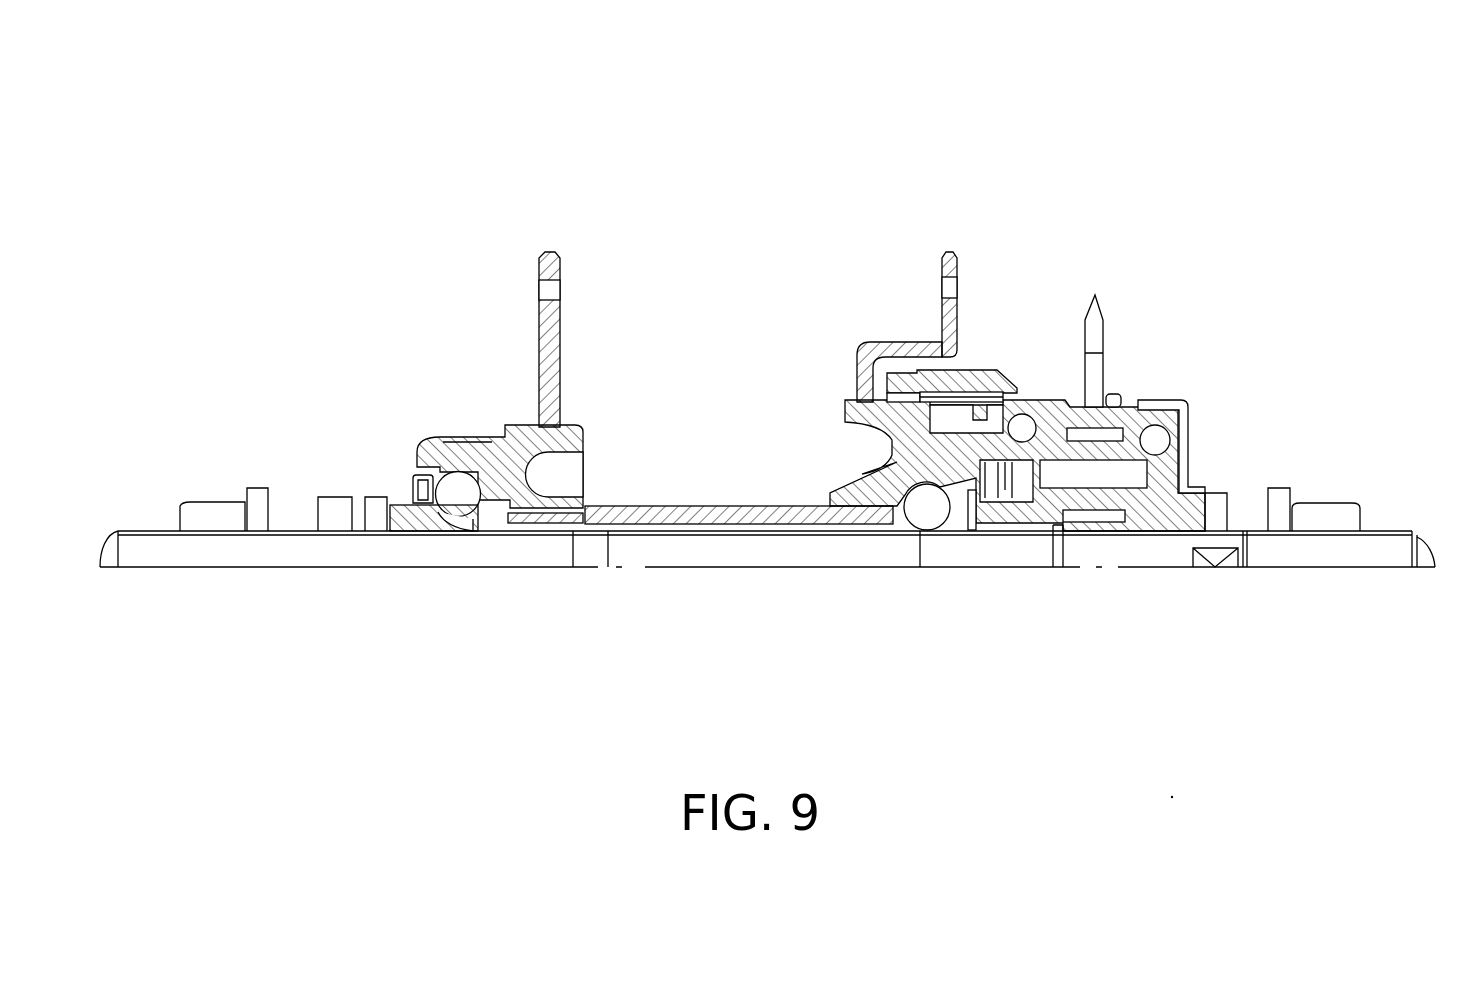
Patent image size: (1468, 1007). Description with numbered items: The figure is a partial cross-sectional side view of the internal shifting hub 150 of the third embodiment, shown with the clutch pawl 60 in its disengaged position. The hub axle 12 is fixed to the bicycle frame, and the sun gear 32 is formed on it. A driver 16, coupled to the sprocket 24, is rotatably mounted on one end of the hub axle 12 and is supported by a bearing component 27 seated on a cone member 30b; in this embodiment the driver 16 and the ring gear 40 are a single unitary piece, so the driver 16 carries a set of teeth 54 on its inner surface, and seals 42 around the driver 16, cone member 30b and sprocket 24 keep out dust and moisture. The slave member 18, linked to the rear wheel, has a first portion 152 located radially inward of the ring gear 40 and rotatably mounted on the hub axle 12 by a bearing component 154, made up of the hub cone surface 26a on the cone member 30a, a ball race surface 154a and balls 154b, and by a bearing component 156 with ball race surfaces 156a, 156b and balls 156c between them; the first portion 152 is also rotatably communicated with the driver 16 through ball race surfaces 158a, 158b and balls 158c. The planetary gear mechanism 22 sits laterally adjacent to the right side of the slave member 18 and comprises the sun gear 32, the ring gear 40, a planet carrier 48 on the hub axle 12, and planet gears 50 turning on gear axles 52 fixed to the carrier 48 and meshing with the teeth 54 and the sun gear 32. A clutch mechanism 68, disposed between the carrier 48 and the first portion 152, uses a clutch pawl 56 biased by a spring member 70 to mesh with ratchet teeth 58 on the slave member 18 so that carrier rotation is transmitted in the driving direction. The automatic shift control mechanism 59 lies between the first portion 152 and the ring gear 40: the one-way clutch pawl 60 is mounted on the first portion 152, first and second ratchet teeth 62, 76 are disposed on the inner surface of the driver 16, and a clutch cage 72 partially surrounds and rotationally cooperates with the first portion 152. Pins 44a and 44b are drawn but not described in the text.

The hub axle 12 is at (1321, 556).
The driver 16 is at (1145, 405).
The slave member 18 is at (718, 518).
The planetary gear mechanism 22 is at (1168, 488).
The sprocket 24 is at (1100, 305).
The hub cone surface 26a is at (442, 518).
The bearing component 27 is at (1189, 437).
The cone member 30a is at (415, 523).
The cone member 30b is at (1153, 520).
The sun gear 32 is at (1135, 532).
The ring gear 40 is at (886, 350).
The seals 42 is at (1190, 413).
The pin 44a is at (549, 250).
The pin 44b is at (948, 252).
The planet carrier 48 is at (980, 520).
The planet gear 50 is at (1092, 523).
The gear axle 52 is at (1163, 480).
The set of teeth 54 is at (1124, 403).
The clutch pawl 56 is at (940, 528).
The ratchet teeth 58 is at (1030, 500).
The automatic shift control mechanism 59 is at (868, 348).
The clutch pawl 60 is at (975, 392).
The first ratchet tooth 62 is at (957, 370).
The clutch mechanism 68 is at (1028, 418).
The spring member 70 is at (967, 513).
The clutch cage 72 is at (917, 346).
The second ratchet tooth 76 is at (880, 393).
The internal shifting hub 150 is at (1130, 203).
The first portion 152 is at (575, 425).
The bearing component 154 is at (393, 448).
The ball race surface 154a is at (494, 450).
The balls 154b is at (457, 490).
The bearing component 156 is at (880, 548).
The ball race surface 156a is at (862, 475).
The ball race surface 156b is at (913, 510).
The balls 156c is at (880, 492).
The ball race surface 158a is at (1003, 513).
The ball race surface 158b is at (1040, 422).
The balls 158c is at (993, 415).